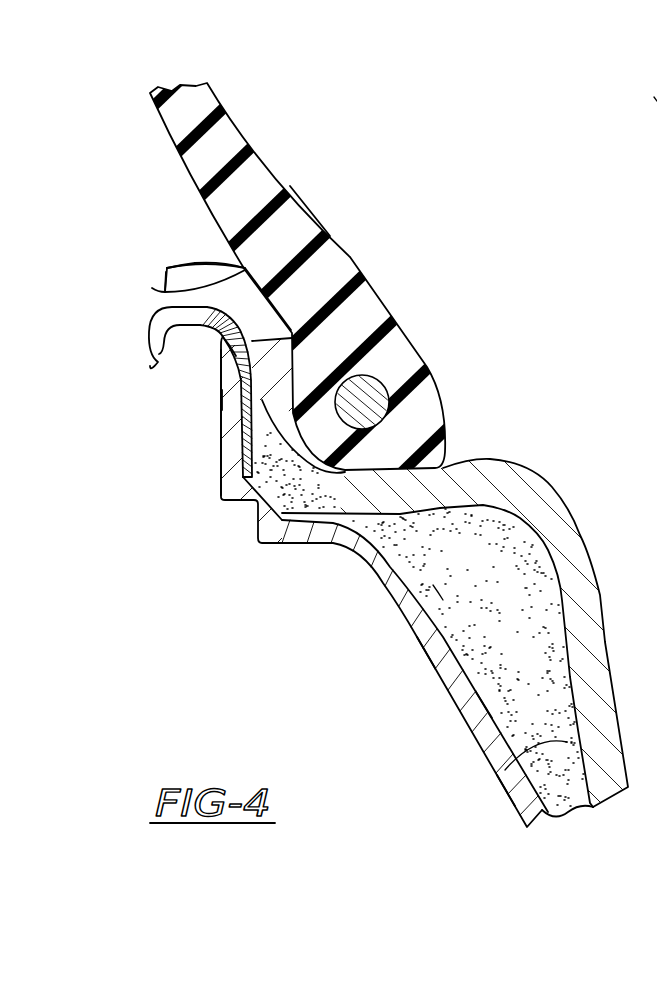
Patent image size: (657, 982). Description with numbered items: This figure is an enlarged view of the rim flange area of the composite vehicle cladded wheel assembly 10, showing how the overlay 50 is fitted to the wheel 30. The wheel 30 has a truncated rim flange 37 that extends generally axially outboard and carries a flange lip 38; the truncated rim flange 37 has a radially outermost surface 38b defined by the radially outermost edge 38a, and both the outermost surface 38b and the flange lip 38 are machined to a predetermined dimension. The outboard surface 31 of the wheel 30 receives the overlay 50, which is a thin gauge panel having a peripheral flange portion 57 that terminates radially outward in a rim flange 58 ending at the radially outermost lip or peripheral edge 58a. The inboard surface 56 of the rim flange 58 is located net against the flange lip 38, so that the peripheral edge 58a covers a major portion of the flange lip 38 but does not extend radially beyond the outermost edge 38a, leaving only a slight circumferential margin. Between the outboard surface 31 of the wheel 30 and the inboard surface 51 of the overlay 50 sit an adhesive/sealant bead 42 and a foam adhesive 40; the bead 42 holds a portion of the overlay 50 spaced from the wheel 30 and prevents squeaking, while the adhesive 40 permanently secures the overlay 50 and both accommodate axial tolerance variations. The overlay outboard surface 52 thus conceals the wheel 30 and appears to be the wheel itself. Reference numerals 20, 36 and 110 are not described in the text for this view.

The composite vehicle cladded wheel assembly 10 is at (190, 565).
The mounting bracket 20 is at (178, 120).
The wheel 30 is at (549, 465).
The outboard surface 31 is at (495, 775).
The foam core 36 is at (382, 500).
The truncated rim flange 37 is at (262, 412).
The flange lip 38 is at (153, 344).
The radially outermost edge 38a is at (170, 270).
The radially outermost surface 38b is at (203, 266).
The foam adhesive 40 is at (433, 587).
The adhesive/sealant bead 42 is at (220, 397).
The overlay 50 is at (492, 801).
The inboard surface 51 is at (480, 692).
The overlay outboard surface 52 is at (425, 662).
The inboard surface 56 is at (307, 208).
The peripheral flange portion 57 is at (222, 345).
The rim flange 58 is at (153, 290).
The radially outermost lip or peripheral edge 58a is at (167, 287).
The vehicle body 110 is at (656, 100).